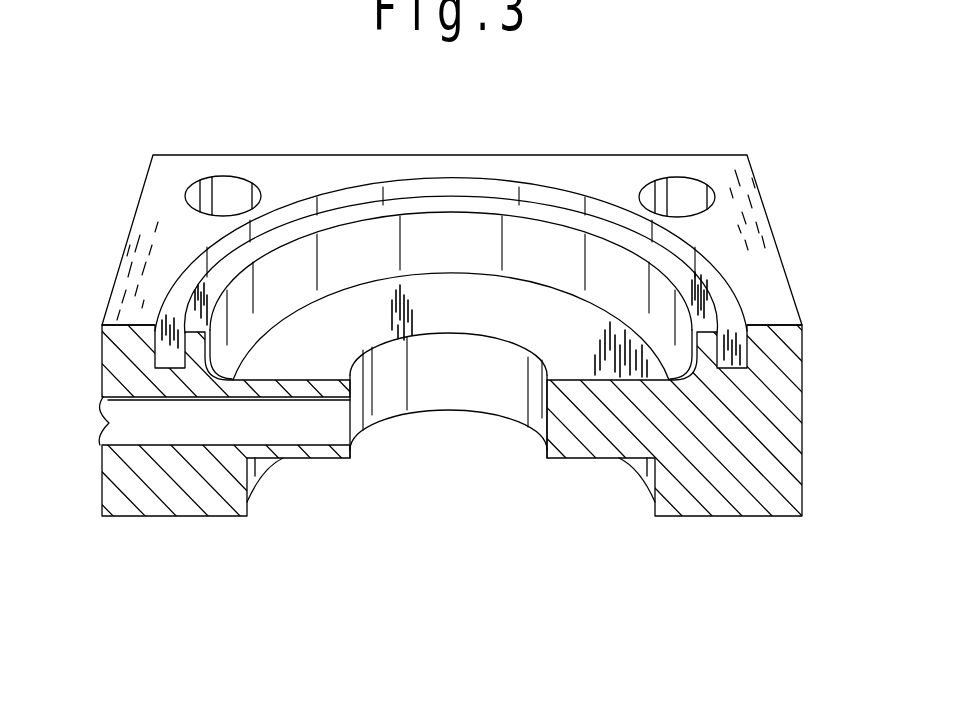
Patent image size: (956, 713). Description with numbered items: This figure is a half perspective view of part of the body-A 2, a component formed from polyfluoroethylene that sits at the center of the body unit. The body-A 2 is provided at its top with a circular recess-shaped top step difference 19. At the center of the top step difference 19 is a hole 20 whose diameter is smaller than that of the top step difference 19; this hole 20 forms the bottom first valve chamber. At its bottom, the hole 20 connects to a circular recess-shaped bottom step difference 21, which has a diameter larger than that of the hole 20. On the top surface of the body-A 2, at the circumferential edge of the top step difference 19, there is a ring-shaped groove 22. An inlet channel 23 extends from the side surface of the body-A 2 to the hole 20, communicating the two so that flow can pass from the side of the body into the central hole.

The body-A 2 is at (773, 445).
The top step difference 19 is at (522, 250).
The hole 20 is at (470, 390).
The bottom step difference 21 is at (262, 478).
The ring-shaped groove 22 is at (725, 292).
The inlet channel 23 is at (157, 430).